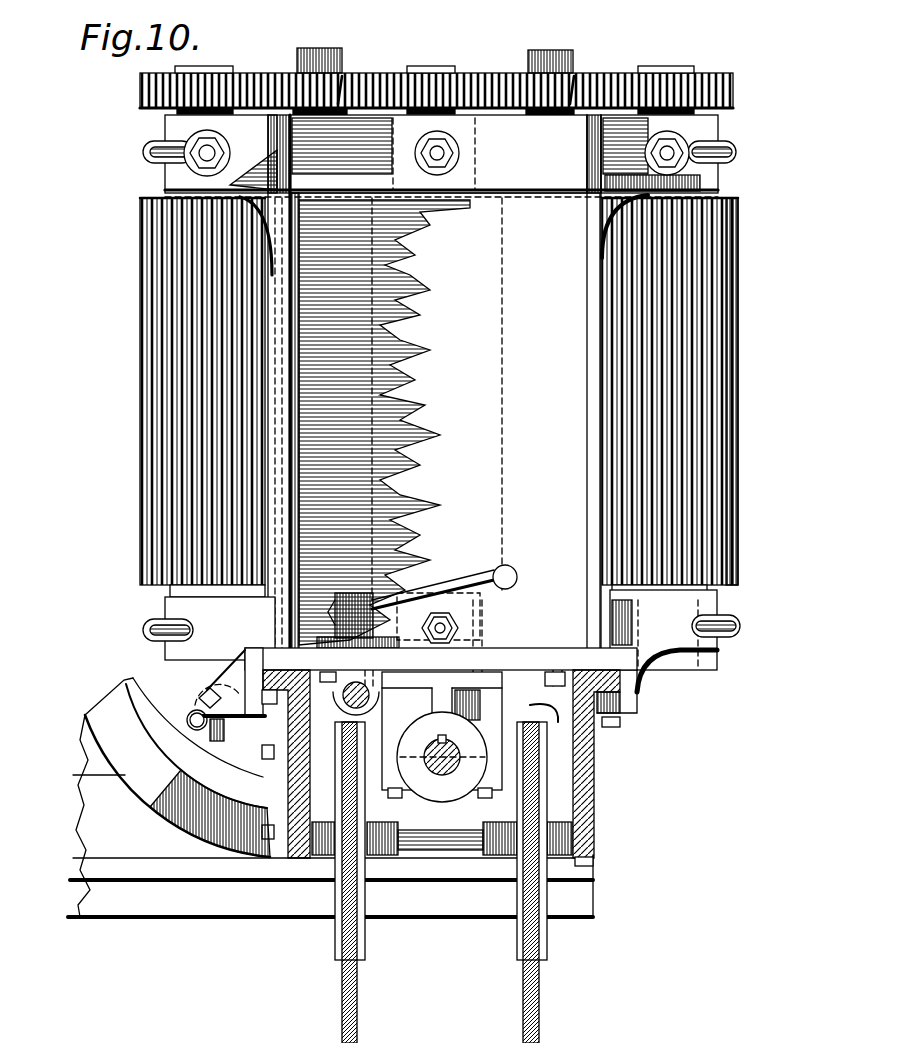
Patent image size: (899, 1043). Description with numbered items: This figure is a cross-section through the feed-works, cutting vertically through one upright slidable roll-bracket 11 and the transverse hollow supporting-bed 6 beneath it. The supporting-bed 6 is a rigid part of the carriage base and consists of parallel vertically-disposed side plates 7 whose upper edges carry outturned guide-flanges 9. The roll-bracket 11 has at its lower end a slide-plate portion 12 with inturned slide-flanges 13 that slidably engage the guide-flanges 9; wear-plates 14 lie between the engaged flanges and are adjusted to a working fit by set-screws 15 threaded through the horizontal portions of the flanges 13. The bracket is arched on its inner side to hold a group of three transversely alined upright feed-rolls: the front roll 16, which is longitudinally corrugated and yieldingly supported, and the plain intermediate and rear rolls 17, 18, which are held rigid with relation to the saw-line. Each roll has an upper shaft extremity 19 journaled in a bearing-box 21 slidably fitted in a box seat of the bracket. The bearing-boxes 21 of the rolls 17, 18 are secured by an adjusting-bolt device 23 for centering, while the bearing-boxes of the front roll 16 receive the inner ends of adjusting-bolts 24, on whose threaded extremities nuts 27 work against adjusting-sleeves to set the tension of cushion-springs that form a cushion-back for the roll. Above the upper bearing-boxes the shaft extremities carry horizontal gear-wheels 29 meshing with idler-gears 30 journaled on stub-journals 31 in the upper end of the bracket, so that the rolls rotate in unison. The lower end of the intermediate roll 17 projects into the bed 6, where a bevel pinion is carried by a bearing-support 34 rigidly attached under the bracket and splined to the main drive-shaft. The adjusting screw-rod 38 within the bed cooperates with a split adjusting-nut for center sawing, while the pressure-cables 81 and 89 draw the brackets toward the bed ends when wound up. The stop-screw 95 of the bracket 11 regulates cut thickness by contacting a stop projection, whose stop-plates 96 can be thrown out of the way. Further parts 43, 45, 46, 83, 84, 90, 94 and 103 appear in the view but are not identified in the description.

The supporting-bed 6 is at (306, 784).
The side plates 7 is at (596, 806).
The outturned guide-flanges 9 is at (616, 690).
The upright slidable roll-bracket 11 is at (445, 421).
The slide-plate portion 12 is at (533, 656).
The inturned slide-flanges 13 is at (633, 678).
The wear-plates 14 is at (615, 705).
The set-screws 15 is at (614, 727).
The front upright feed-roll 16 is at (146, 300).
The intermediate upright feed-roll 17 is at (503, 333).
The rear upright feed-roll 18 is at (740, 256).
The upper shaft extremities 19 is at (202, 68).
The bearing-boxes 21 is at (178, 608).
The adjusting-bolt device 23 is at (447, 150).
The adjusting-bolts 24 is at (215, 152).
The nuts 27 is at (690, 170).
The horizontal gear-wheels 29 is at (145, 88).
The idler-gears 30 is at (338, 90).
The stub-journals 31 is at (435, 47).
The bearing-support 34 is at (440, 788).
The adjusting screw-rod 38 is at (348, 690).
The switch base 43 is at (358, 685).
The switch block 45 is at (395, 614).
The hand lever 46 is at (452, 585).
The cable 81 is at (358, 995).
The shaft 83 is at (450, 850).
The guide tube 84 is at (338, 925).
The pressure-cable 89 is at (541, 996).
The hook 90 is at (548, 712).
The pawl 94 is at (205, 697).
The stop-screw 95 is at (218, 718).
The stop-plates 96 is at (188, 720).
The toothed segment 103 is at (110, 730).